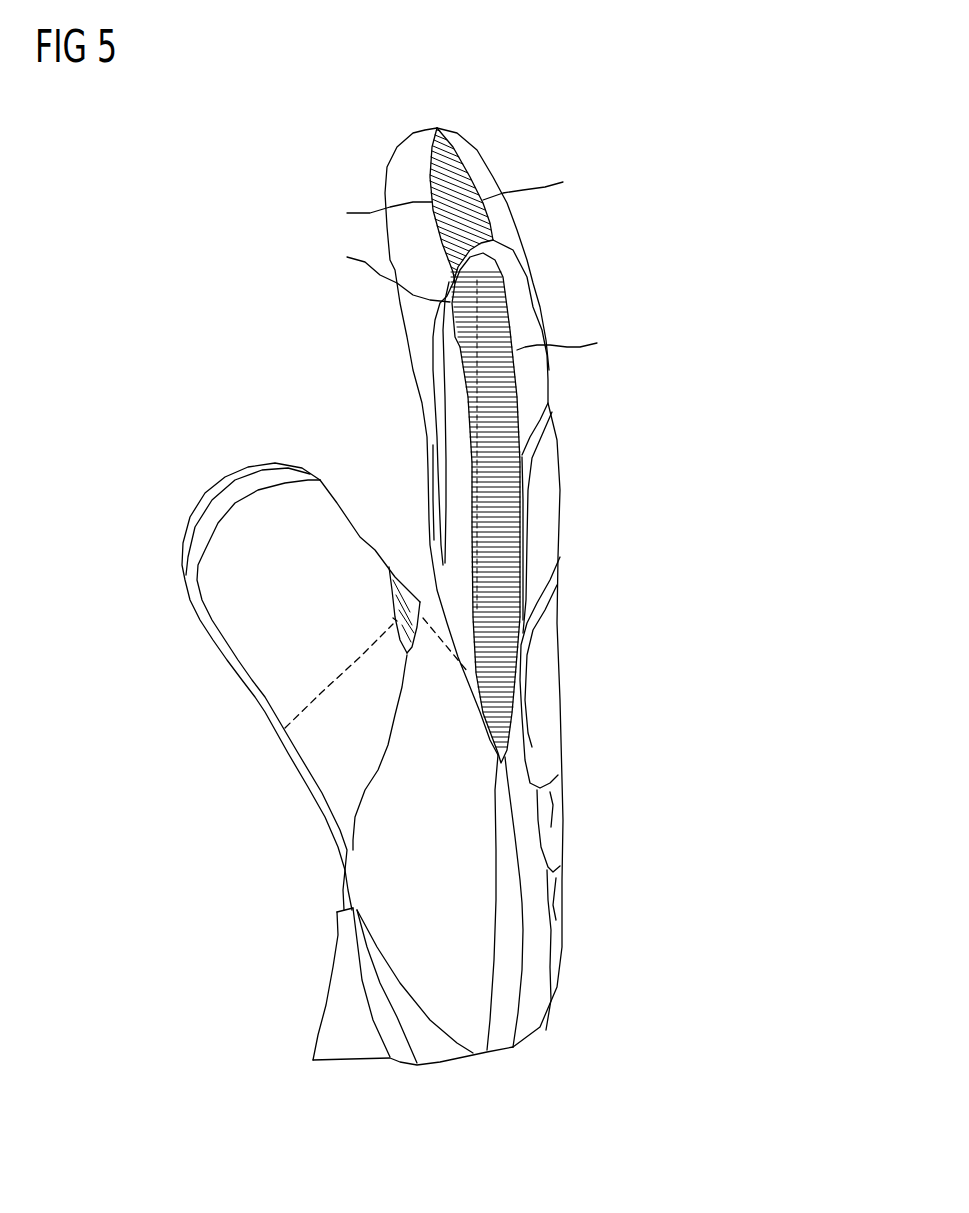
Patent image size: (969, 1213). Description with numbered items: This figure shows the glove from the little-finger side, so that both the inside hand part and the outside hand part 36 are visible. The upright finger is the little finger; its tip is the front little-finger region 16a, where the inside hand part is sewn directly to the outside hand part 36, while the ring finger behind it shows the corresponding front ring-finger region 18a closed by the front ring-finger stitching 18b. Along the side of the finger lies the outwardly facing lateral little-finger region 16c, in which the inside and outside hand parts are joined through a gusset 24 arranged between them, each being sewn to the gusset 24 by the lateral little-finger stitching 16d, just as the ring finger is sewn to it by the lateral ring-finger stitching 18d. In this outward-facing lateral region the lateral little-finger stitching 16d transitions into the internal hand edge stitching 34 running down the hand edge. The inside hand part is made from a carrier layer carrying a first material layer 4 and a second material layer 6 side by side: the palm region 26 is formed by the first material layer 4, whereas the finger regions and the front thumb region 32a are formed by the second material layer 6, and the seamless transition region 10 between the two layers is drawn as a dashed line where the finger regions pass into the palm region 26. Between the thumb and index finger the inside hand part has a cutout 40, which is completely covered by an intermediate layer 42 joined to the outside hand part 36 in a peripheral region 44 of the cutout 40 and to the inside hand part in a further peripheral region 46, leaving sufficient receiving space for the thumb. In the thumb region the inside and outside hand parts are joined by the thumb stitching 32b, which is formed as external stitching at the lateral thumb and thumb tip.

The first material layer 4 is at (391, 976).
The second material layer 6 is at (293, 695).
The seamless transition region 10 is at (442, 673).
The front little-finger region 16a is at (432, 643).
The lateral little-finger region 16c is at (416, 467).
The lateral little-finger stitching 16d is at (467, 298).
The front ring-finger region 18a is at (405, 439).
The front ring-finger stitching 18b is at (456, 215).
The lateral ring-finger stitching 18d is at (450, 194).
The gusset 24 is at (526, 412).
The palm region 26 is at (388, 852).
The front thumb region 32a is at (298, 695).
The thumb stitching 32b is at (219, 686).
The internal hand edge stitching 34 is at (557, 910).
The outside hand part 36 is at (580, 595).
The cutout 40 is at (379, 577).
The intermediate layer 42 is at (409, 560).
The peripheral region of the cutout 44 is at (382, 560).
The further peripheral region 46 is at (348, 607).